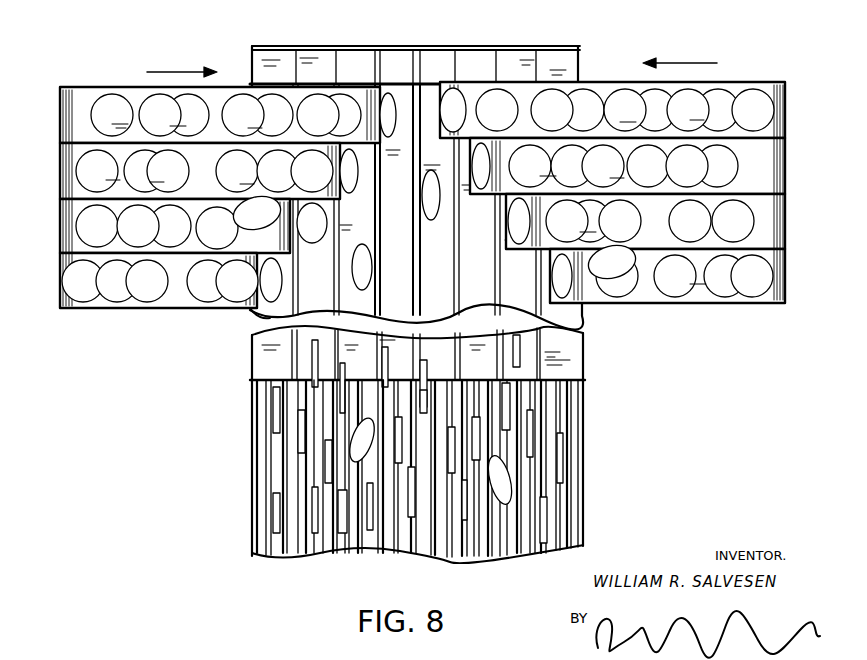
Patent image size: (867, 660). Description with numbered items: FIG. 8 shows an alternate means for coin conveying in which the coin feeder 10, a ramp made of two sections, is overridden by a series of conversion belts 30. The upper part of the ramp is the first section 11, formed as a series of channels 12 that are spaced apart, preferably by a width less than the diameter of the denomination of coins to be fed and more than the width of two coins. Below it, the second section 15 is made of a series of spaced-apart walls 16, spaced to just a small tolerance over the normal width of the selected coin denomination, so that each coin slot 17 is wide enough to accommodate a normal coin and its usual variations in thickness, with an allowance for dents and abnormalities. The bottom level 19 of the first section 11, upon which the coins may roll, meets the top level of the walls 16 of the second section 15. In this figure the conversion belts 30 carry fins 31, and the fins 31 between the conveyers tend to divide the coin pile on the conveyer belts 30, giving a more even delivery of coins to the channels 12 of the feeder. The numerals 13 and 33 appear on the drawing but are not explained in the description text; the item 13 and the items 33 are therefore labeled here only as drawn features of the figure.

The coin feeder 10 is at (151, 439).
The first section 11 is at (250, 342).
The channels 12 is at (430, 74).
The top frame 13 is at (510, 48).
The second section 15 is at (402, 471).
The walls 16 is at (563, 423).
The coin slot 17 is at (573, 508).
The bottom level 19 is at (558, 363).
The conversion belts 30 is at (63, 176).
The fins 31 is at (228, 95).
The disc 33 is at (147, 108).